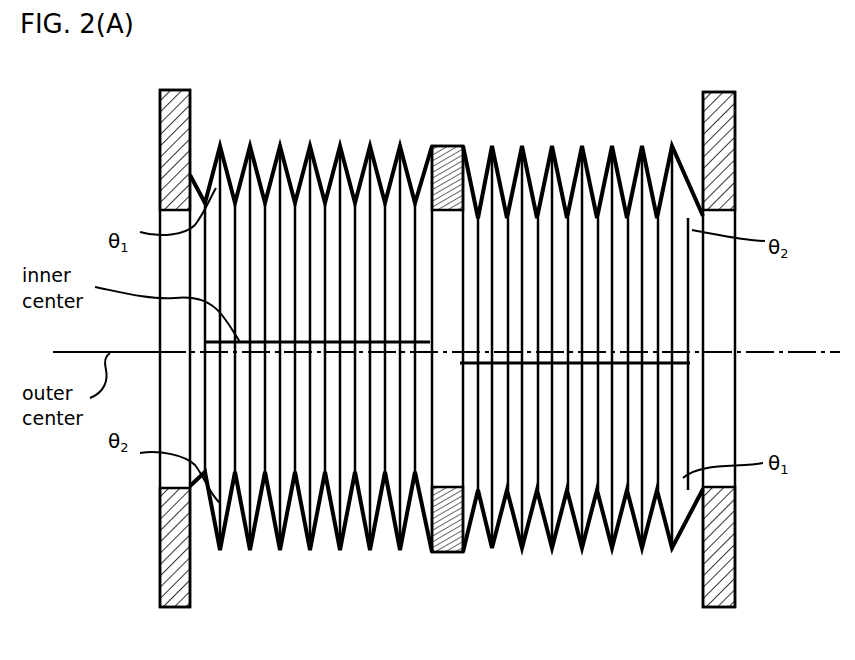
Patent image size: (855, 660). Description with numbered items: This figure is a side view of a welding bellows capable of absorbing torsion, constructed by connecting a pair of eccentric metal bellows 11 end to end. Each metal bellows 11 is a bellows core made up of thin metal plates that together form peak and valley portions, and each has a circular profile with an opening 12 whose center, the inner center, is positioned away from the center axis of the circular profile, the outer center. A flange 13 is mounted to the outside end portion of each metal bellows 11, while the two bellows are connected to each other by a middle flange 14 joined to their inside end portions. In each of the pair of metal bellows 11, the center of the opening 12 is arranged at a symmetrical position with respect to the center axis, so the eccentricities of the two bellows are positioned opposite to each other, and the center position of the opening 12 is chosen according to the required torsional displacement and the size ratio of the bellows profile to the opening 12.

The metal bellows 11 is at (342, 153).
The opening 12 is at (682, 397).
The flange 13 is at (170, 90).
The middle flange 14 is at (465, 440).